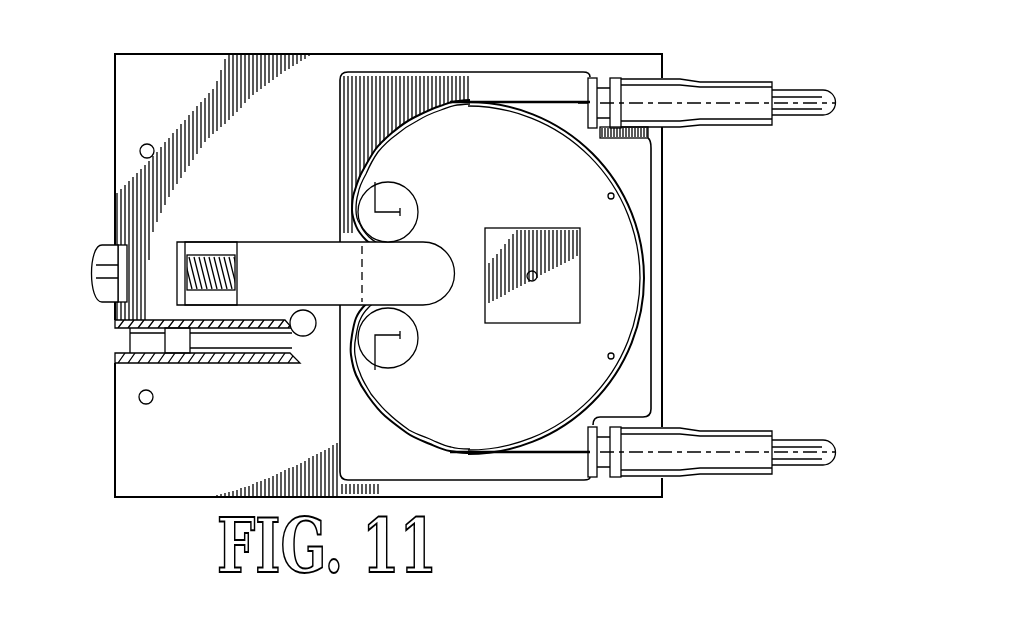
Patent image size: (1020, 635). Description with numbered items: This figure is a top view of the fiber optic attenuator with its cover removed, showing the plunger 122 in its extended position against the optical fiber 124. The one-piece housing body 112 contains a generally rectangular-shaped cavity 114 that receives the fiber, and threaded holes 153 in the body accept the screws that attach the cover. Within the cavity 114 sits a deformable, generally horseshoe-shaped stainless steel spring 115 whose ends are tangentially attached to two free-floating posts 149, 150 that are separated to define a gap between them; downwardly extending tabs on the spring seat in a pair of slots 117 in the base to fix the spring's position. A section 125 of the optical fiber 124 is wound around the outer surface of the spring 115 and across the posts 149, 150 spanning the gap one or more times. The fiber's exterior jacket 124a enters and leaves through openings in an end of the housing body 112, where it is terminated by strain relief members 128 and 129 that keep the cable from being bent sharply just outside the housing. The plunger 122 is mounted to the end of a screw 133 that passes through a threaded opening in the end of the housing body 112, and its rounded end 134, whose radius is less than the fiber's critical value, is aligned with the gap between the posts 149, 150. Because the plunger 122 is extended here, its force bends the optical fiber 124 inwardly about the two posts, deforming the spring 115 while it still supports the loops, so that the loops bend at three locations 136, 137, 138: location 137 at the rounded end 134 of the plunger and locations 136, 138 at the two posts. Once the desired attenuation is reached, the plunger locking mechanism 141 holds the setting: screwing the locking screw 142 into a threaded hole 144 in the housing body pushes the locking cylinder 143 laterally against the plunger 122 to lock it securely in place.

The housing body 112 is at (188, 72).
The cavity 114 is at (537, 85).
The spring 115 is at (542, 128).
The slots 117 is at (608, 197).
The plunger 122 is at (287, 268).
The optical fiber 124 is at (543, 462).
The exterior jacket 124a is at (798, 110).
The section of optical fiber 125 is at (640, 193).
The strain relief member 128 is at (742, 458).
The strain relief member 129 is at (739, 96).
The screw 133 is at (213, 253).
The rounded end of plunger 134 is at (375, 268).
The bend location 136 is at (370, 211).
The bend location 137 is at (414, 262).
The bend location 138 is at (371, 338).
The plunger locking mechanism 141 is at (204, 358).
The locking screw 142 is at (243, 340).
The locking cylinder 143 is at (308, 334).
The threaded hole 144 is at (130, 344).
The post 149 is at (417, 340).
The post 150 is at (418, 207).
The threaded holes 153 is at (140, 150).